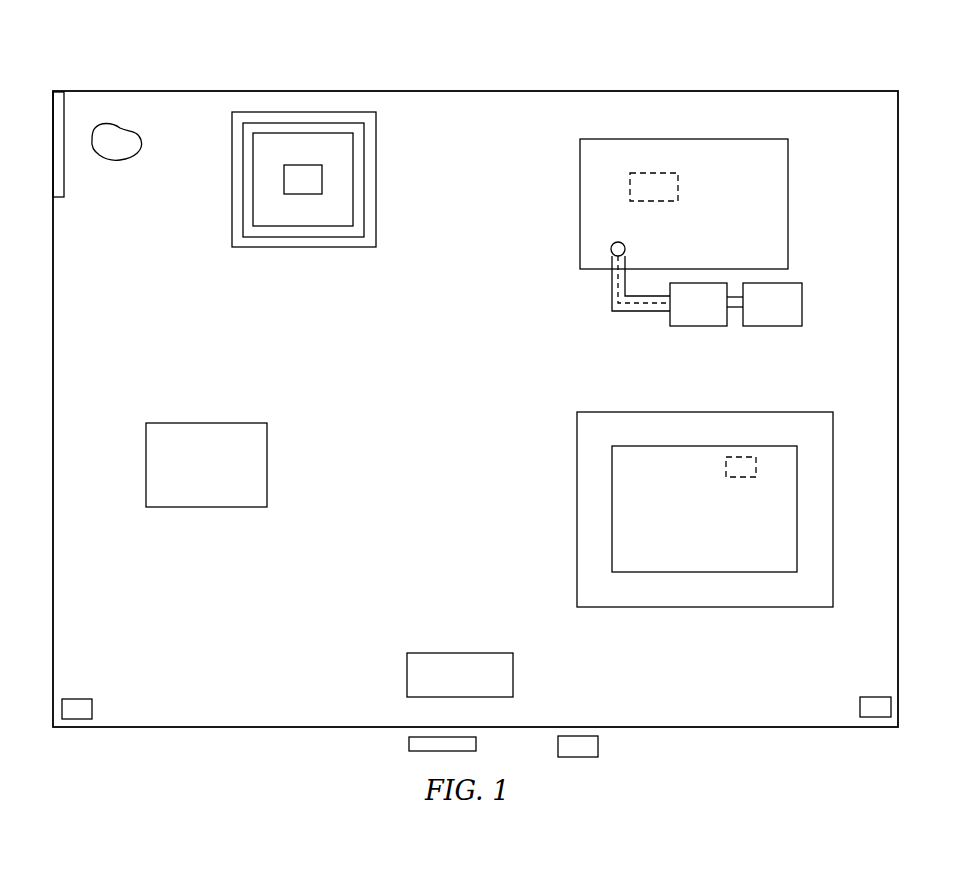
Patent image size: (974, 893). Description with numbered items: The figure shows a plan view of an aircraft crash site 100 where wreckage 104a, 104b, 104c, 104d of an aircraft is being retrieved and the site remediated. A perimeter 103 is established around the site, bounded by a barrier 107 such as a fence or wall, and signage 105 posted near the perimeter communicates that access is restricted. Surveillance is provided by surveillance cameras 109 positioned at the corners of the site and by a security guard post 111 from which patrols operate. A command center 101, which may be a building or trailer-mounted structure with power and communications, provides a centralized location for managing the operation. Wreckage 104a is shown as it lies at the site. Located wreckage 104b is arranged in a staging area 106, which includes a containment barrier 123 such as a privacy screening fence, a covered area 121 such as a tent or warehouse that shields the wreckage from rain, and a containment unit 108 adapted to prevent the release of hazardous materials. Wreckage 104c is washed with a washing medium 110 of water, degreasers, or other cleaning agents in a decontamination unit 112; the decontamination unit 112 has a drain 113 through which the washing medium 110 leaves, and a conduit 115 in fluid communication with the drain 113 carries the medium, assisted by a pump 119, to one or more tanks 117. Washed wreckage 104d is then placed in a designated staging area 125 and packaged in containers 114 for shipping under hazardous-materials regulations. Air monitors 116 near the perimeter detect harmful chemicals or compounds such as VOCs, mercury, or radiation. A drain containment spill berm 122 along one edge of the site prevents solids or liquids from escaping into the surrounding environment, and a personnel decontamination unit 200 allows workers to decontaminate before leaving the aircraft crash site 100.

The aircraft crash site 100 is at (850, 76).
The command center 101 is at (513, 670).
The perimeter 103 is at (898, 229).
The wreckage 104a is at (107, 122).
The located wreckage 104b is at (284, 177).
The wreckage being washed 104c is at (640, 172).
The washed wreckage 104d is at (745, 457).
The signage 105 is at (409, 744).
The staging area 106 is at (383, 133).
The barrier 107 is at (898, 285).
The containment unit 108 is at (285, 227).
The surveillance cameras 109 is at (873, 718).
The washing medium 110 is at (633, 308).
The security guard post 111 is at (598, 743).
The decontamination unit 112 is at (798, 130).
The drain 113 is at (625, 244).
The containers 114 is at (612, 468).
The conduit 115 is at (611, 288).
The air monitors 116 is at (70, 720).
The tanks 117 is at (770, 327).
The pump 119 is at (695, 327).
The covered area 121 is at (364, 170).
The drain containment spill berm 122 is at (64, 187).
The containment barrier 123 is at (327, 248).
The designated staging area 125 is at (577, 424).
The personnel decontamination unit 200 is at (163, 423).